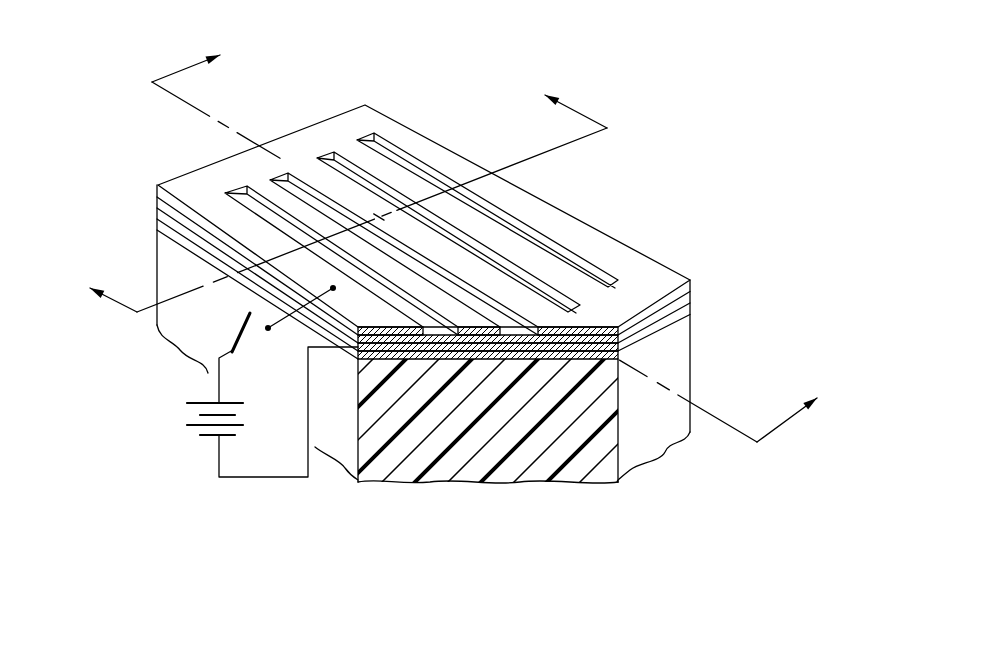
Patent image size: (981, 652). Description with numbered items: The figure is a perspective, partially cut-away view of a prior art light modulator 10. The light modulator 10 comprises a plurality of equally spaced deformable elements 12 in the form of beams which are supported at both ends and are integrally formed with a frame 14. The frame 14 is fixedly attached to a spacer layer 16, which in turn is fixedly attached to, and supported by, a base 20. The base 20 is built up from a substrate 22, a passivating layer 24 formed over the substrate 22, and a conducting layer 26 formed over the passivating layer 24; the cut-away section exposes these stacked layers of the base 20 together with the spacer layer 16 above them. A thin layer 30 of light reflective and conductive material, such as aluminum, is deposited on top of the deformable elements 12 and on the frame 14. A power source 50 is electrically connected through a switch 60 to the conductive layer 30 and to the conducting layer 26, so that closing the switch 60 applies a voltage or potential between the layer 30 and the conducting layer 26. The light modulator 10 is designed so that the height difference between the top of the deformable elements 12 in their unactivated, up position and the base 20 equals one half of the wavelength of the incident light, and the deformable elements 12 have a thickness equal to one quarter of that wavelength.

The light modulator 10 is at (605, 44).
The deformable elements 12 is at (273, 195).
The frame 14 is at (563, 228).
The spacer layer 16 is at (692, 288).
The base 20 is at (140, 240).
The substrate 22 is at (657, 433).
The passivating layer 24 is at (693, 310).
The conducting layer 26 is at (692, 300).
The thin layer of light reflective and conductive material 30 is at (662, 277).
The power source 50 is at (190, 450).
The switch 60 is at (238, 337).